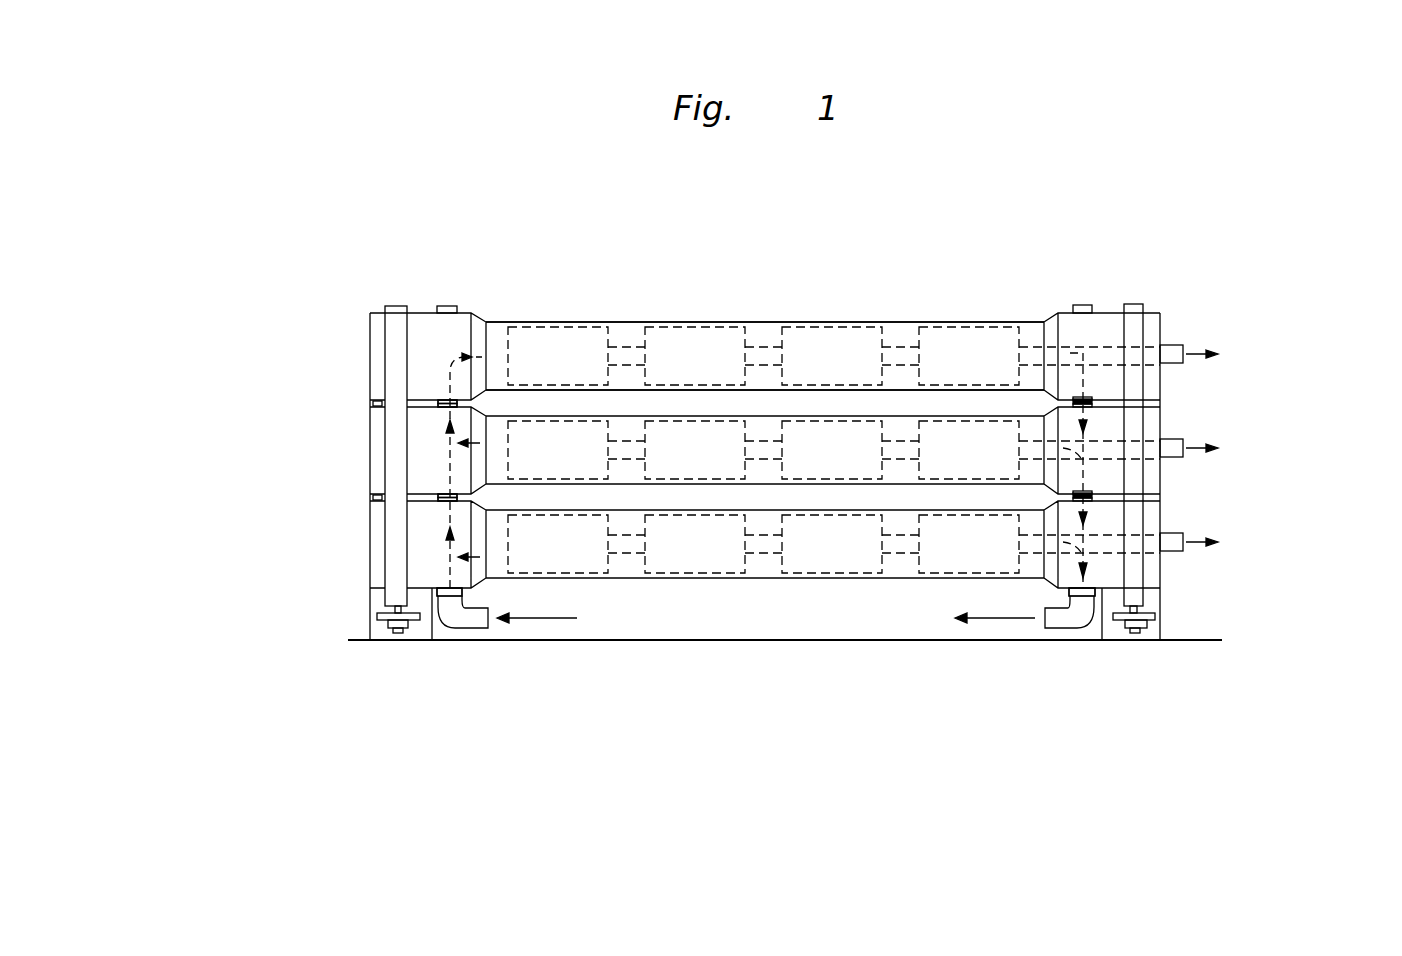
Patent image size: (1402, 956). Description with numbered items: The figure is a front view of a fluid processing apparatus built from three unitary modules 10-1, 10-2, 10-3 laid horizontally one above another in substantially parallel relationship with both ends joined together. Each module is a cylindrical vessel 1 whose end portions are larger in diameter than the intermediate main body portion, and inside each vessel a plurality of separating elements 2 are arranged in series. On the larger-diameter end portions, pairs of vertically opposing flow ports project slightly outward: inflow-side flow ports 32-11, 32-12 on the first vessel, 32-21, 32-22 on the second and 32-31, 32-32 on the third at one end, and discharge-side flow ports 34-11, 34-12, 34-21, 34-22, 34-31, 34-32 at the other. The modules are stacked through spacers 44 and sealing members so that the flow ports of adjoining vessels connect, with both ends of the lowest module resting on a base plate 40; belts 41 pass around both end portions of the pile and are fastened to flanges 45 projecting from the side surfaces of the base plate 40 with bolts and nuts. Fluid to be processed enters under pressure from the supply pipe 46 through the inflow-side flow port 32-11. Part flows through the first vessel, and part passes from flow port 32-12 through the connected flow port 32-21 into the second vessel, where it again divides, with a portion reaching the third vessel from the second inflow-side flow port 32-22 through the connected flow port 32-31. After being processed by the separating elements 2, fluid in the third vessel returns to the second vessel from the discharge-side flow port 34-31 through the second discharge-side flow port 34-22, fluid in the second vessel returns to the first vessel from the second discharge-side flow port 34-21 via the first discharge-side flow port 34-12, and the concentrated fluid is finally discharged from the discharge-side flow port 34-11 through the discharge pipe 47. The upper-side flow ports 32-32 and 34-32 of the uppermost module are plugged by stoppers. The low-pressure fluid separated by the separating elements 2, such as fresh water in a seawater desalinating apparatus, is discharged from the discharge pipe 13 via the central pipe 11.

The cylindrical vessel 1 is at (907, 430).
The separating elements 2 is at (838, 330).
The central pipe 11 is at (645, 440).
The discharge pipe 13 is at (1168, 345).
The unitary module 10-1 is at (636, 600).
The unitary module 10-2 is at (690, 400).
The unitary module 10-3 is at (556, 314).
The inflow-side flow port 32-11 is at (444, 586).
The inflow-side flow port 32-12 is at (443, 503).
The inflow-side flow port 32-21 is at (443, 490).
The second inflow-side flow port 32-22 is at (443, 408).
The inflow-side flow port 32-31 is at (444, 397).
The inflow-side flow port 32-32 is at (446, 306).
The discharge-side flow port 34-11 is at (1088, 583).
The first discharge-side flow port 34-12 is at (1086, 502).
The second discharge-side flow port 34-21 is at (1086, 493).
The second discharge-side flow port 34-22 is at (1086, 407).
The discharge-side flow port 34-31 is at (1086, 398).
The discharge-side flow port 34-32 is at (1087, 305).
The base plate 40 is at (372, 597).
The belts 41 is at (397, 306).
The spacers 44 is at (367, 402).
The flanges 45 is at (423, 623).
The supply pipe 46 is at (465, 622).
The discharge pipe 47 is at (1063, 617).